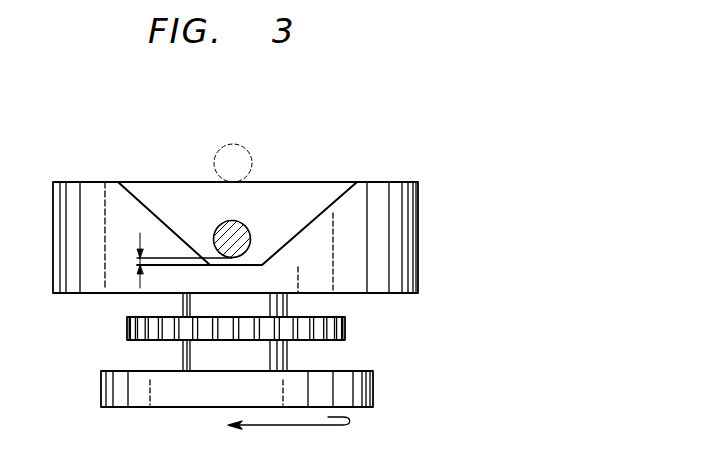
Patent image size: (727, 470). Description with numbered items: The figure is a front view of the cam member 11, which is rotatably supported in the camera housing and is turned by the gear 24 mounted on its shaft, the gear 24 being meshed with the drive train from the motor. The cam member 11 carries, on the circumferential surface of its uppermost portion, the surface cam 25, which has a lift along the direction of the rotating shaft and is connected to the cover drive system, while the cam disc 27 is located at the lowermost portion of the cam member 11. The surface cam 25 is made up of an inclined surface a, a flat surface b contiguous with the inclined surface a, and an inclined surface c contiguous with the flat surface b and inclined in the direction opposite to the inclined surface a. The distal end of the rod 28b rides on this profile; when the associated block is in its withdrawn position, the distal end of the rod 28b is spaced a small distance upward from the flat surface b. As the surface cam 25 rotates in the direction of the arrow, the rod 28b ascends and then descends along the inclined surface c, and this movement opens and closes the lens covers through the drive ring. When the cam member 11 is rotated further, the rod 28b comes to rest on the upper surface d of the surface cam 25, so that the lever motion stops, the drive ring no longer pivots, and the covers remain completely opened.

The surface cam 25 is at (268, 181).
The rod 28b is at (238, 232).
The cam member 11 is at (508, 272).
The gear 24 is at (347, 330).
The cam disc 27 is at (373, 390).
The inclined surface a is at (318, 214).
The flat surface b is at (253, 263).
The inclined surface c is at (164, 221).
The upper surface d is at (105, 182).